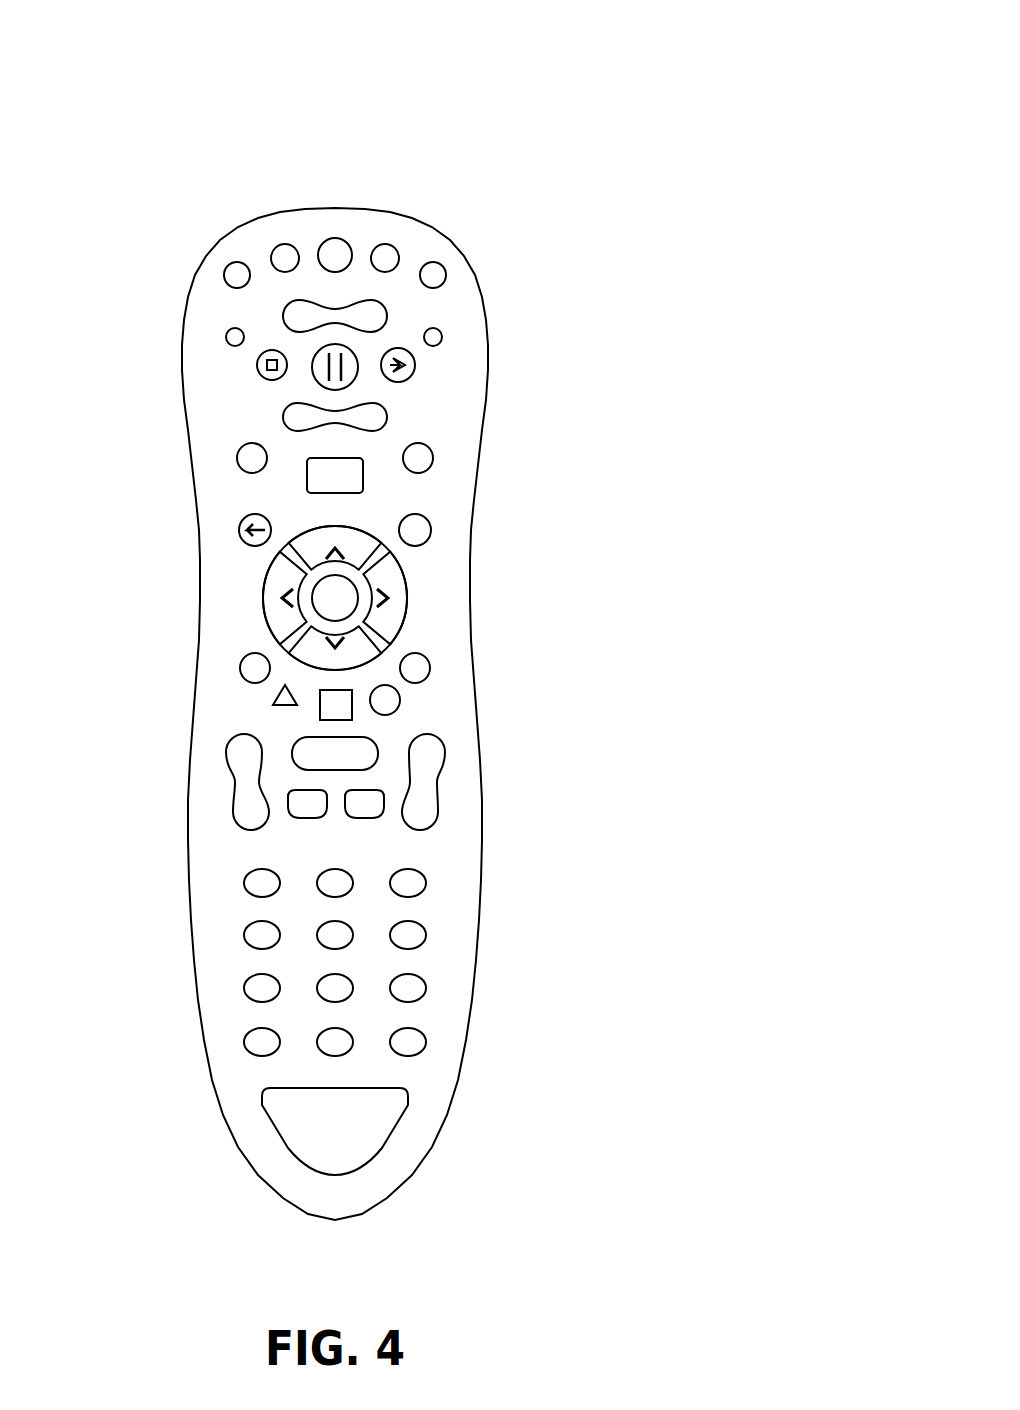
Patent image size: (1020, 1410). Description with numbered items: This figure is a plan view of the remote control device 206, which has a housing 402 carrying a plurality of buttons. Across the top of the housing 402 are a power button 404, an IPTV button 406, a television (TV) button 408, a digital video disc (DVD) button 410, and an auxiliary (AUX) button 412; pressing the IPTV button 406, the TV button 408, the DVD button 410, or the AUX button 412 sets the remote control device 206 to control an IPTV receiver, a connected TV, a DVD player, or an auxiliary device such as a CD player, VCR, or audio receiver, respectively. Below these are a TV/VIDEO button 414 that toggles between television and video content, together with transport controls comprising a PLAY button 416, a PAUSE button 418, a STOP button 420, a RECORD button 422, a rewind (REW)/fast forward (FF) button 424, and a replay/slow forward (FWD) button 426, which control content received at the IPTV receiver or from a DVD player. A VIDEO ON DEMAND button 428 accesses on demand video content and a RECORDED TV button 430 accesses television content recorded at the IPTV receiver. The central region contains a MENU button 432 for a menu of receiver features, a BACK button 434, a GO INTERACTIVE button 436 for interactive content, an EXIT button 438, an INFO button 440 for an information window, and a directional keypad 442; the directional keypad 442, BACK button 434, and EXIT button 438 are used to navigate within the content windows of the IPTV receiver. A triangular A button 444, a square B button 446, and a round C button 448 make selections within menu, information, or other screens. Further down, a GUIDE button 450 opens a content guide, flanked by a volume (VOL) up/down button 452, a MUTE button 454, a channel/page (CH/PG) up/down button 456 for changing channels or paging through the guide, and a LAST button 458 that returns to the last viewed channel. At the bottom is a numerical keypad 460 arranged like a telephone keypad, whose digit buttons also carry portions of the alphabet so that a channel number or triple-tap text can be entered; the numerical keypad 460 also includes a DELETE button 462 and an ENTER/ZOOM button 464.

The remote control device 206 is at (613, 164).
The housing 402 is at (408, 714).
The power button 404 is at (253, 200).
The IPTV button 406 is at (151, 248).
The television (TV) button 408 is at (192, 215).
The digital video disc (DVD) button 410 is at (482, 215).
The auxiliary (AUX) button 412 is at (522, 248).
The TV/VIDEO button 414 is at (519, 323).
The PLAY button 416 is at (492, 360).
The PAUSE button 418 is at (212, 373).
The STOP button 420 is at (181, 360).
The RECORD button 422 is at (152, 323).
The rewind (REW)/fast forward (FF) button 424 is at (221, 292).
The replay/slow forward (FWD) button 426 is at (236, 418).
The VIDEO ON DEMAND button 428 is at (171, 463).
The RECORDED TV button 430 is at (497, 461).
The MENU button 432 is at (219, 494).
The BACK button 434 is at (178, 536).
The GO INTERACTIVE button 436 is at (491, 536).
The EXIT button 438 is at (172, 671).
The INFO button 440 is at (502, 675).
The directional keypad 442 is at (251, 592).
The triangular A button 444 is at (196, 706).
The square B button 446 is at (203, 727).
The round C button 448 is at (483, 716).
The GUIDE button 450 is at (231, 786).
The volume (VOL) up/down button 452 is at (172, 782).
The MUTE button 454 is at (201, 847).
The channel/page (CH/PG) up/down button 456 is at (503, 782).
The LAST button 458 is at (459, 827).
The numerical keypad 460 is at (423, 863).
The DELETE button 462 is at (182, 1055).
The ENTER/ZOOM button 464 is at (462, 1105).